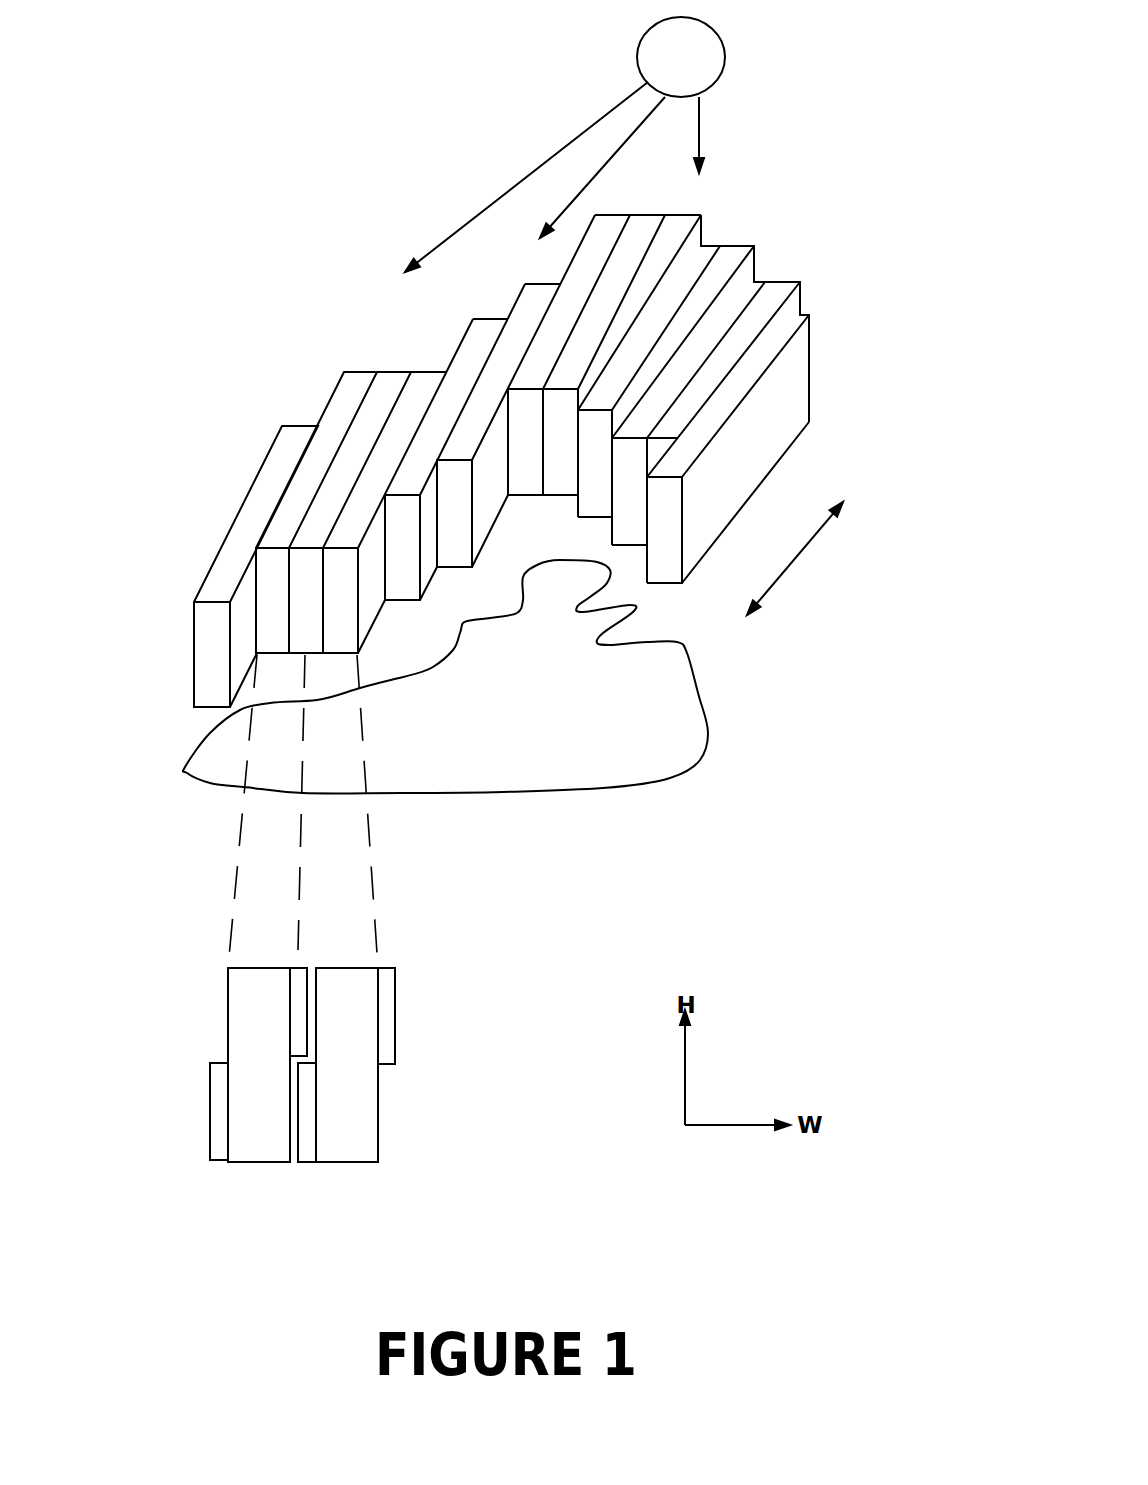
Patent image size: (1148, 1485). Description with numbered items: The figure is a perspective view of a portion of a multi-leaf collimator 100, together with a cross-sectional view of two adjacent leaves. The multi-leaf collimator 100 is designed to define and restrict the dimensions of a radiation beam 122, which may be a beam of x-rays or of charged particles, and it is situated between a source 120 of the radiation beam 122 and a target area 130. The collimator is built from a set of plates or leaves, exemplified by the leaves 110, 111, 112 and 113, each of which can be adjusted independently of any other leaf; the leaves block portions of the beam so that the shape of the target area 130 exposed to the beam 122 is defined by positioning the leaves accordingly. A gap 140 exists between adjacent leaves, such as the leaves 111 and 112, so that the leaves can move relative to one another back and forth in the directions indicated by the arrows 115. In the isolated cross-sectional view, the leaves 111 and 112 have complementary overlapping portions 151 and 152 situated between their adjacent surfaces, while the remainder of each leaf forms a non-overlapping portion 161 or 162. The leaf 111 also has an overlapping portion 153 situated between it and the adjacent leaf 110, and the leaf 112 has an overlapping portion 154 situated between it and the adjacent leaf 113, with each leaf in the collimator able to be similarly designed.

The multi-leaf collimator 100 is at (197, 452).
The leaf 110 is at (297, 437).
The leaf 111 is at (353, 390).
The leaf 112 is at (387, 390).
The leaf 113 is at (422, 388).
The arrows 115 is at (796, 578).
The source 120 is at (662, 69).
The radiation beam 122 is at (543, 122).
The target area 130 is at (491, 739).
The gap 140 is at (376, 372).
The overlapping portion 151 is at (297, 968).
The overlapping portion 152 is at (308, 1165).
The overlapping portion 153 is at (208, 1160).
The overlapping portion 154 is at (398, 1018).
The non-overlapping portion 161 is at (239, 1075).
The non-overlapping portion 162 is at (328, 1075).